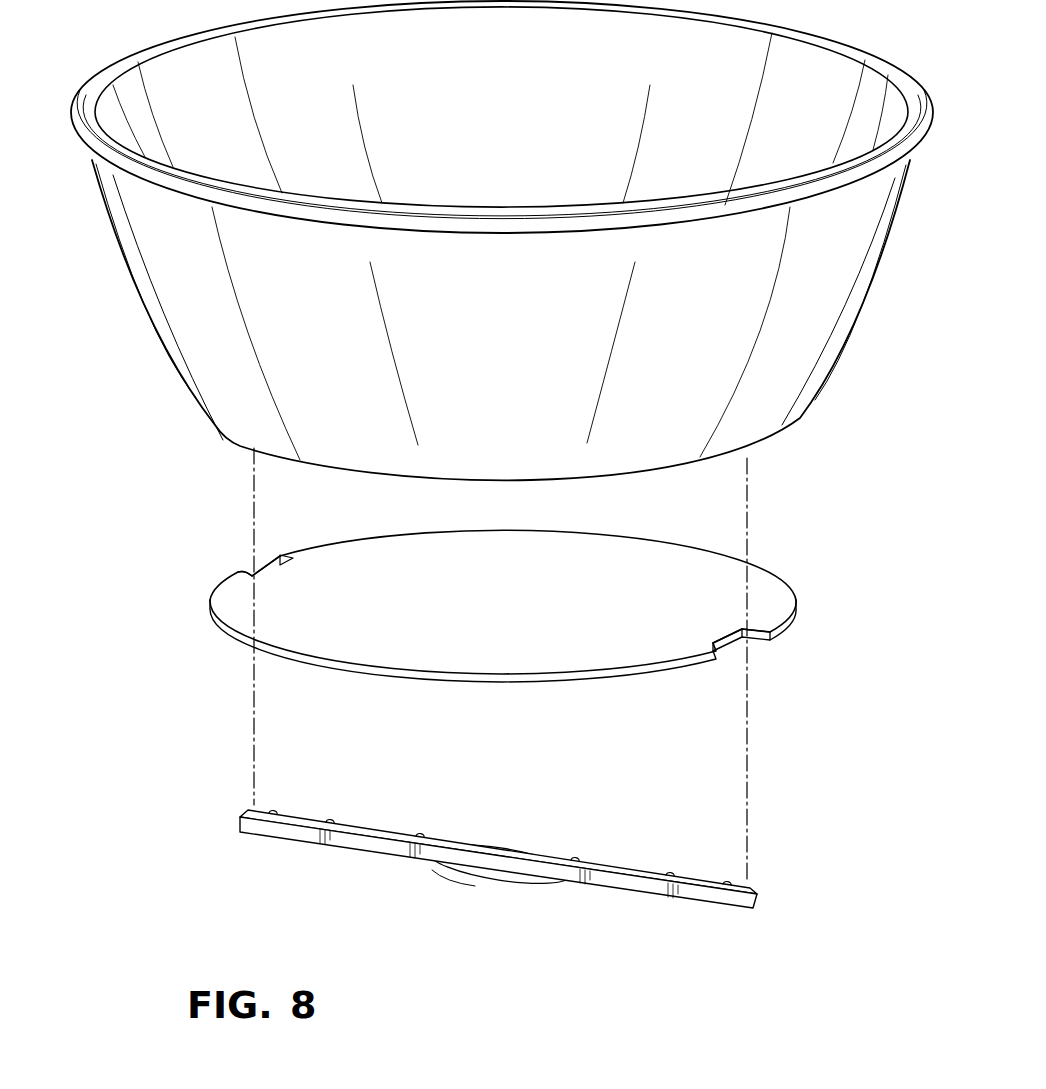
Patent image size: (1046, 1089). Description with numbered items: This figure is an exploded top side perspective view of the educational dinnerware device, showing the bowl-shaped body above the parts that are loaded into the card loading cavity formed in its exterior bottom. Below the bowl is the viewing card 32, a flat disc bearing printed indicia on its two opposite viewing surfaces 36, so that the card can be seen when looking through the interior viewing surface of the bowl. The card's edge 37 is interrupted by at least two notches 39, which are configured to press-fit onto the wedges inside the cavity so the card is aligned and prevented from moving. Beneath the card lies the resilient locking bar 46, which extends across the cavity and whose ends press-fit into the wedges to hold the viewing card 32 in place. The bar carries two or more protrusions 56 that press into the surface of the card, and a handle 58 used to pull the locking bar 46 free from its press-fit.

The viewing card 32 is at (540, 629).
The viewing surfaces 36 is at (710, 578).
The edge 37 is at (313, 663).
The notches 39 is at (268, 567).
The resilient locking bar 46 is at (640, 887).
The protrusions 56 is at (273, 813).
The handle 58 is at (473, 870).